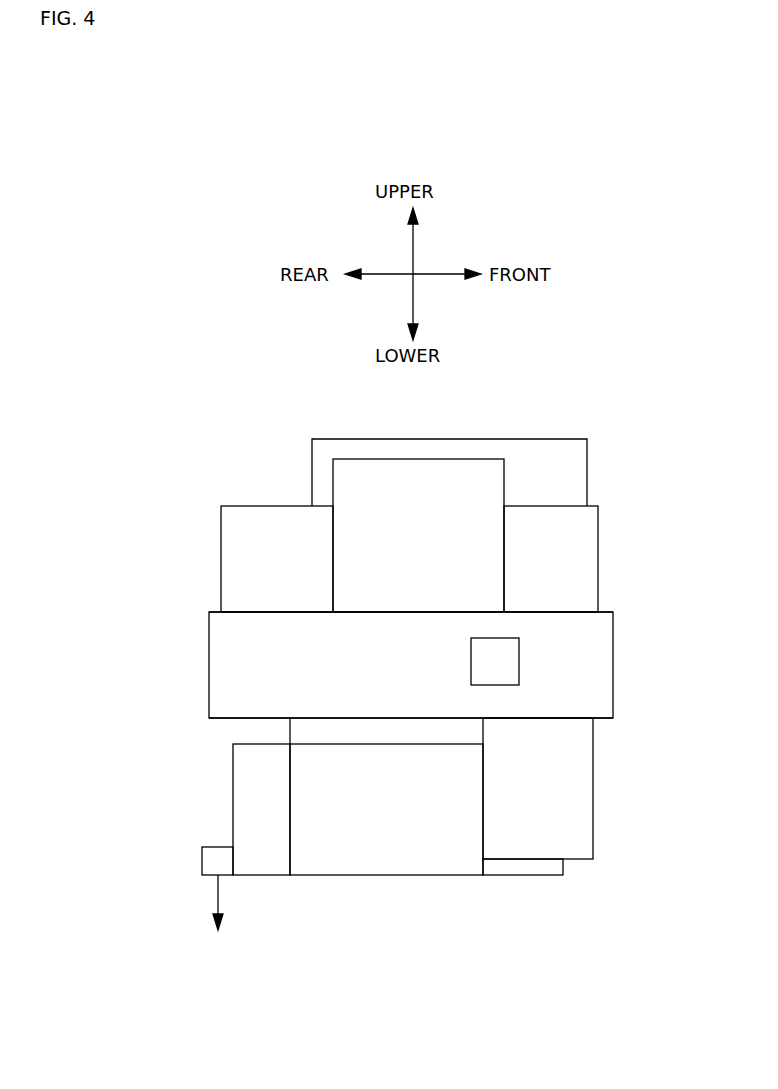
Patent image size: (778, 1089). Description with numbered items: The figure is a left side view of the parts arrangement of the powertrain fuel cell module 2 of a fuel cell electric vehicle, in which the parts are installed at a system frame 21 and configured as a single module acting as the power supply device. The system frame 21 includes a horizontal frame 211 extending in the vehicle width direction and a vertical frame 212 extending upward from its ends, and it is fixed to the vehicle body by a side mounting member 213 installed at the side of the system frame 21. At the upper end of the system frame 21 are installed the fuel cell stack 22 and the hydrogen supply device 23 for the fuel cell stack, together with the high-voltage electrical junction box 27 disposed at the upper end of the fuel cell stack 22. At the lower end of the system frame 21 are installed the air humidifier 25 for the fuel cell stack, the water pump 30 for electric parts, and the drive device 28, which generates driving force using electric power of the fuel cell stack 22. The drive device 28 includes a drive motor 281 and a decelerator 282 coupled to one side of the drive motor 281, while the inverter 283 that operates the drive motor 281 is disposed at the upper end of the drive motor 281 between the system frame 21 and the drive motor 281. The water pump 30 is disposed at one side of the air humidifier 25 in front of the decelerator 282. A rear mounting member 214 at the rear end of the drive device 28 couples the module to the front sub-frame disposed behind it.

The powertrain fuel cell (PFC) module 2 is at (545, 422).
The system frame 21 is at (110, 622).
The horizontal frame 211 is at (215, 632).
The vertical frame 212 is at (215, 702).
The side mounting member 213 is at (507, 662).
The rear mounting member 214 is at (202, 855).
The fuel cell stack 22 is at (558, 506).
The hydrogen supply device (FPS) 23 is at (470, 459).
The air humidifier 25 is at (593, 790).
The electrical junction box 27 is at (346, 439).
The drive device 28 is at (316, 851).
The drive motor 281 is at (343, 876).
The decelerator 282 is at (278, 876).
The inverter 283 is at (295, 730).
The water pump 30 is at (522, 876).